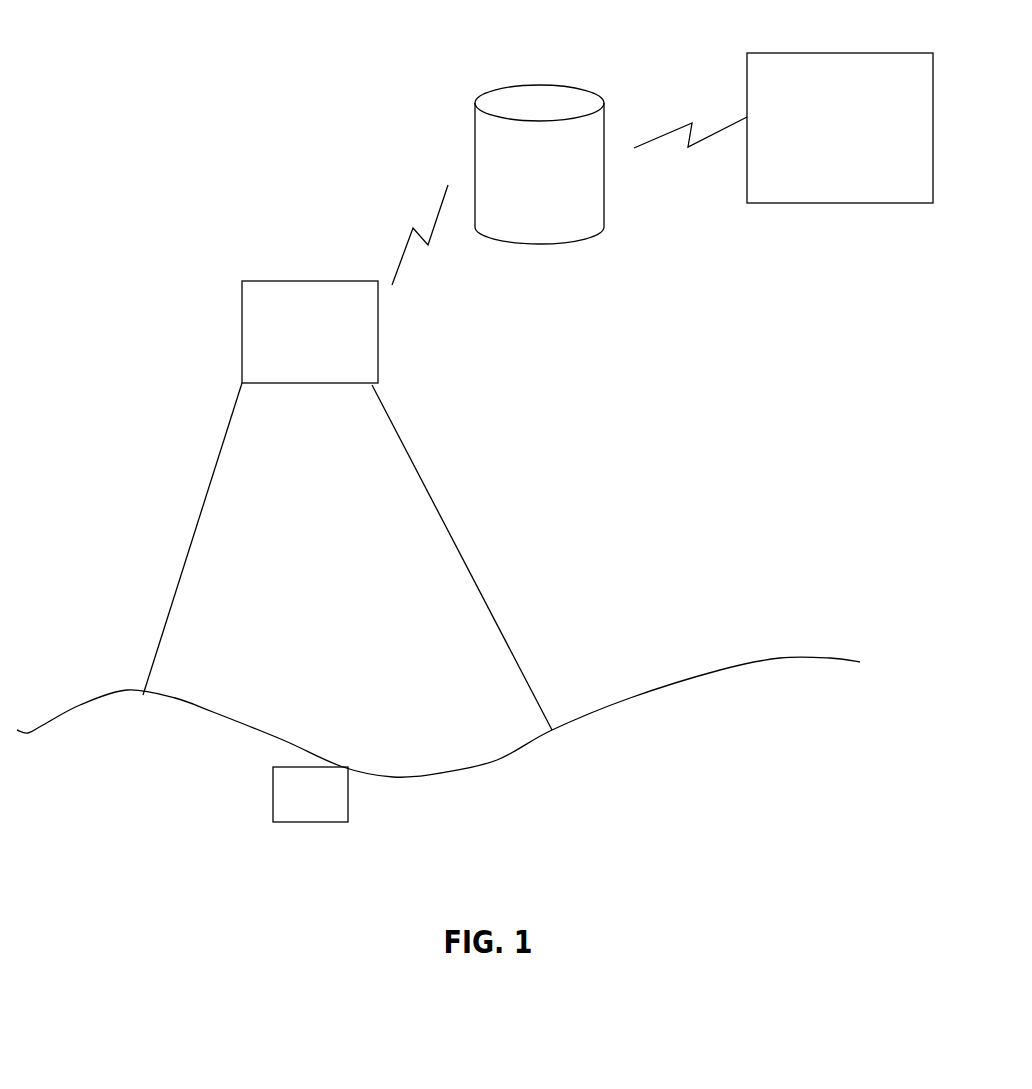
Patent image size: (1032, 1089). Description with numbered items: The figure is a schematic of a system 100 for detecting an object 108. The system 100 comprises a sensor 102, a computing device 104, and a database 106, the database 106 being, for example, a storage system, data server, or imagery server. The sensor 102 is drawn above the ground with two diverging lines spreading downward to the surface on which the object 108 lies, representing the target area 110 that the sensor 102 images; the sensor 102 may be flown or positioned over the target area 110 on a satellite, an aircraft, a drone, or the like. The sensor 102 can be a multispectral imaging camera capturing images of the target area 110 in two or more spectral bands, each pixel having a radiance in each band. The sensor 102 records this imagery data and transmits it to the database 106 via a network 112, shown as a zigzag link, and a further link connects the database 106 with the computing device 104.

The system 100 is at (106, 100).
The sensor 102 is at (295, 359).
The computing device 104 is at (825, 154).
The database 106 is at (525, 196).
The object 108 is at (295, 819).
The target area 110 is at (458, 547).
The network 112 is at (414, 228).